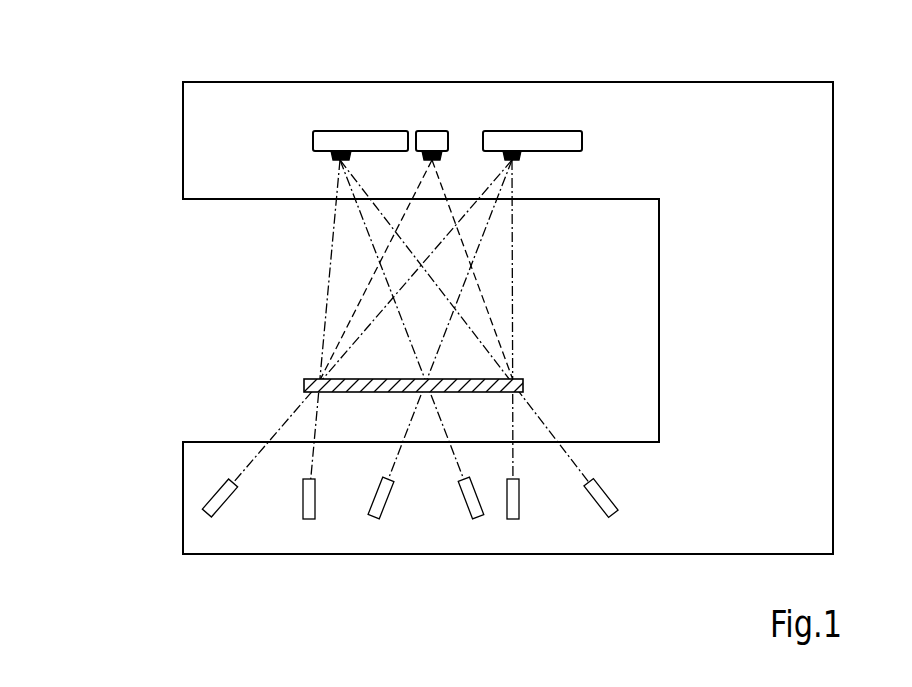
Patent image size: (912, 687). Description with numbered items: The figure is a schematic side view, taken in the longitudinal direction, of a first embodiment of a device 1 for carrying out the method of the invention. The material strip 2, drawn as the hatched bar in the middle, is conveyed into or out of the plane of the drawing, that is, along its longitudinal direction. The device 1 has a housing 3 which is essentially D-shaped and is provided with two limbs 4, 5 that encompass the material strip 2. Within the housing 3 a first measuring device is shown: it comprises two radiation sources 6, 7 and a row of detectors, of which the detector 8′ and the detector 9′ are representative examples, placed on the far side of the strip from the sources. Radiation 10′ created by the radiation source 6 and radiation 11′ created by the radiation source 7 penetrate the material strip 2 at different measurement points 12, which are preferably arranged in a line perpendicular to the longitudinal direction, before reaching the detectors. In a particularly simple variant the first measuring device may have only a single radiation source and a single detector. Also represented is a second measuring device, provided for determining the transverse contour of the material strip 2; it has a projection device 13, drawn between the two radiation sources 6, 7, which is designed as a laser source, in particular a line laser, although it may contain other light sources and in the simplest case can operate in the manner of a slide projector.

The device 1 is at (128, 122).
The material strip 2 is at (312, 386).
The housing 3 is at (802, 275).
The limb 4 is at (253, 100).
The limb 5 is at (252, 533).
The radiation source 6 is at (378, 133).
The radiation source 7 is at (562, 137).
The projection device 13 is at (434, 137).
The detector 8′ is at (207, 516).
The detector 9′ is at (302, 520).
The radiation 10′ is at (383, 218).
The radiation 11′ is at (467, 208).
The measurement point 12 is at (425, 384).